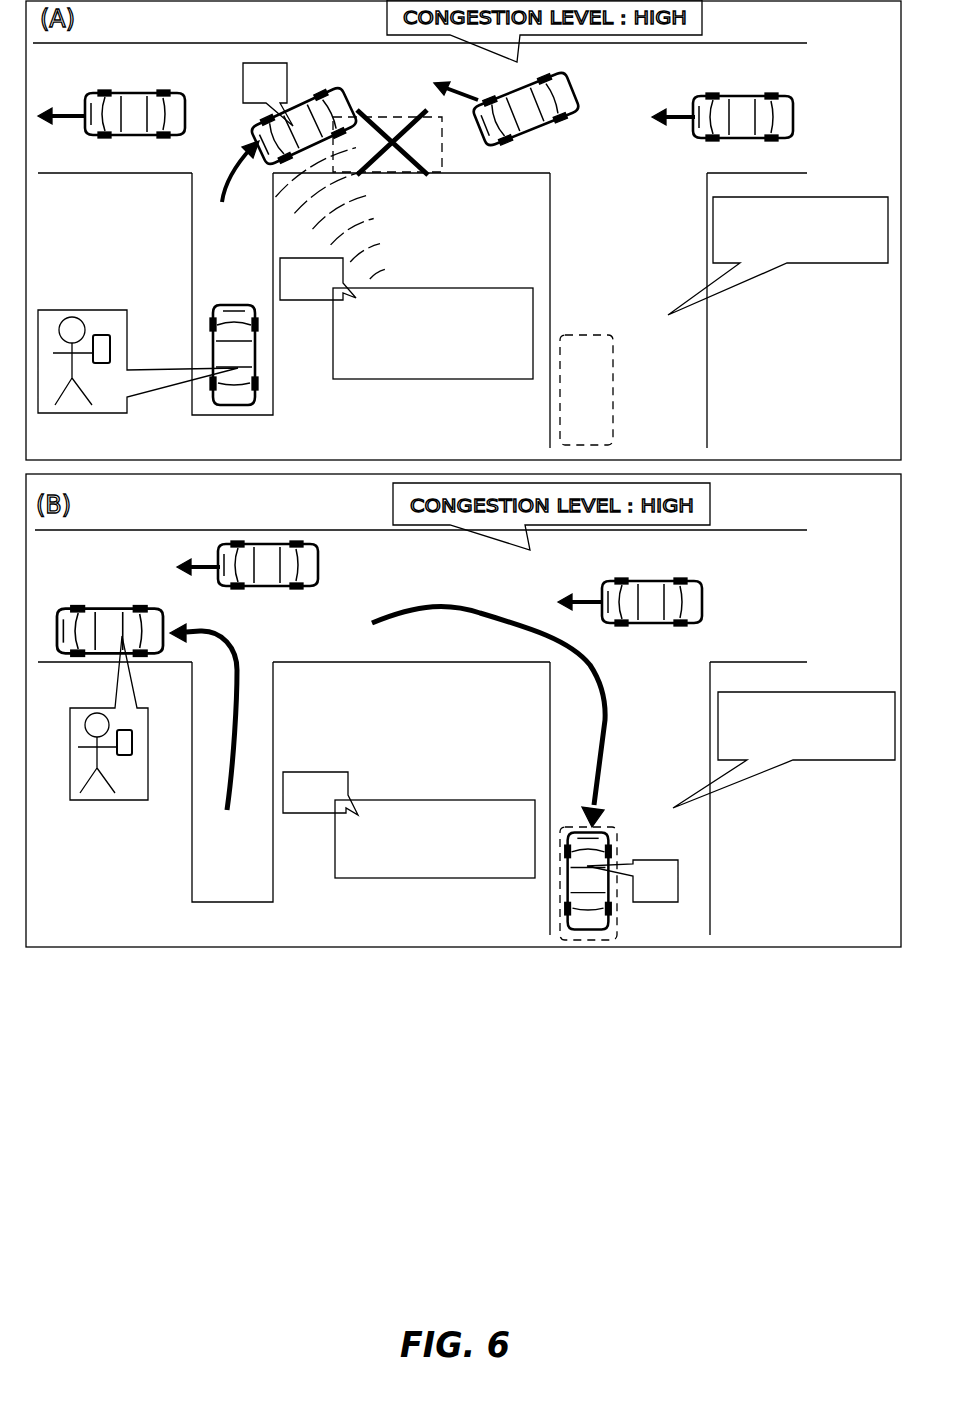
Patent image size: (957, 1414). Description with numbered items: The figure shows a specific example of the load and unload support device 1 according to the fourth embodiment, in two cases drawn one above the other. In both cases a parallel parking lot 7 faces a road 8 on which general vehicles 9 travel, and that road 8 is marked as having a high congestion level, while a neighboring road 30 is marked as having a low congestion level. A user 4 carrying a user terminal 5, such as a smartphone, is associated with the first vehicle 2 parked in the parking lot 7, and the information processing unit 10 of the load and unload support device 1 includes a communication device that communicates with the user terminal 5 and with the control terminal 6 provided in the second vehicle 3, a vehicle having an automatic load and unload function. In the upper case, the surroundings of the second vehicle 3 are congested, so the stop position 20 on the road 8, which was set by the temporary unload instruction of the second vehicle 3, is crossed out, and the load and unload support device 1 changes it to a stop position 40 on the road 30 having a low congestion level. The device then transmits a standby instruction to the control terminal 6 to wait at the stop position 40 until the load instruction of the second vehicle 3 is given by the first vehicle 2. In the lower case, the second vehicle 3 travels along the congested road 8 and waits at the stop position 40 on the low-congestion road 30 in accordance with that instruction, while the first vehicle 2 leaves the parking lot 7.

The load and unload support device 1 is at (468, 288).
The first vehicle 2 is at (213, 327).
The second vehicle 3 is at (328, 97).
The user 4 is at (72, 317).
The user terminal 5 is at (105, 335).
The control terminal 6 is at (460, 482).
The parallel parking lot 7 is at (268, 395).
The road 8 is at (521, 154).
The general vehicle 9 is at (137, 97).
The information processing unit 10 is at (331, 481).
The stop position 20 is at (395, 116).
The road having a low congestion level 30 is at (693, 355).
The stop position 40 is at (585, 335).